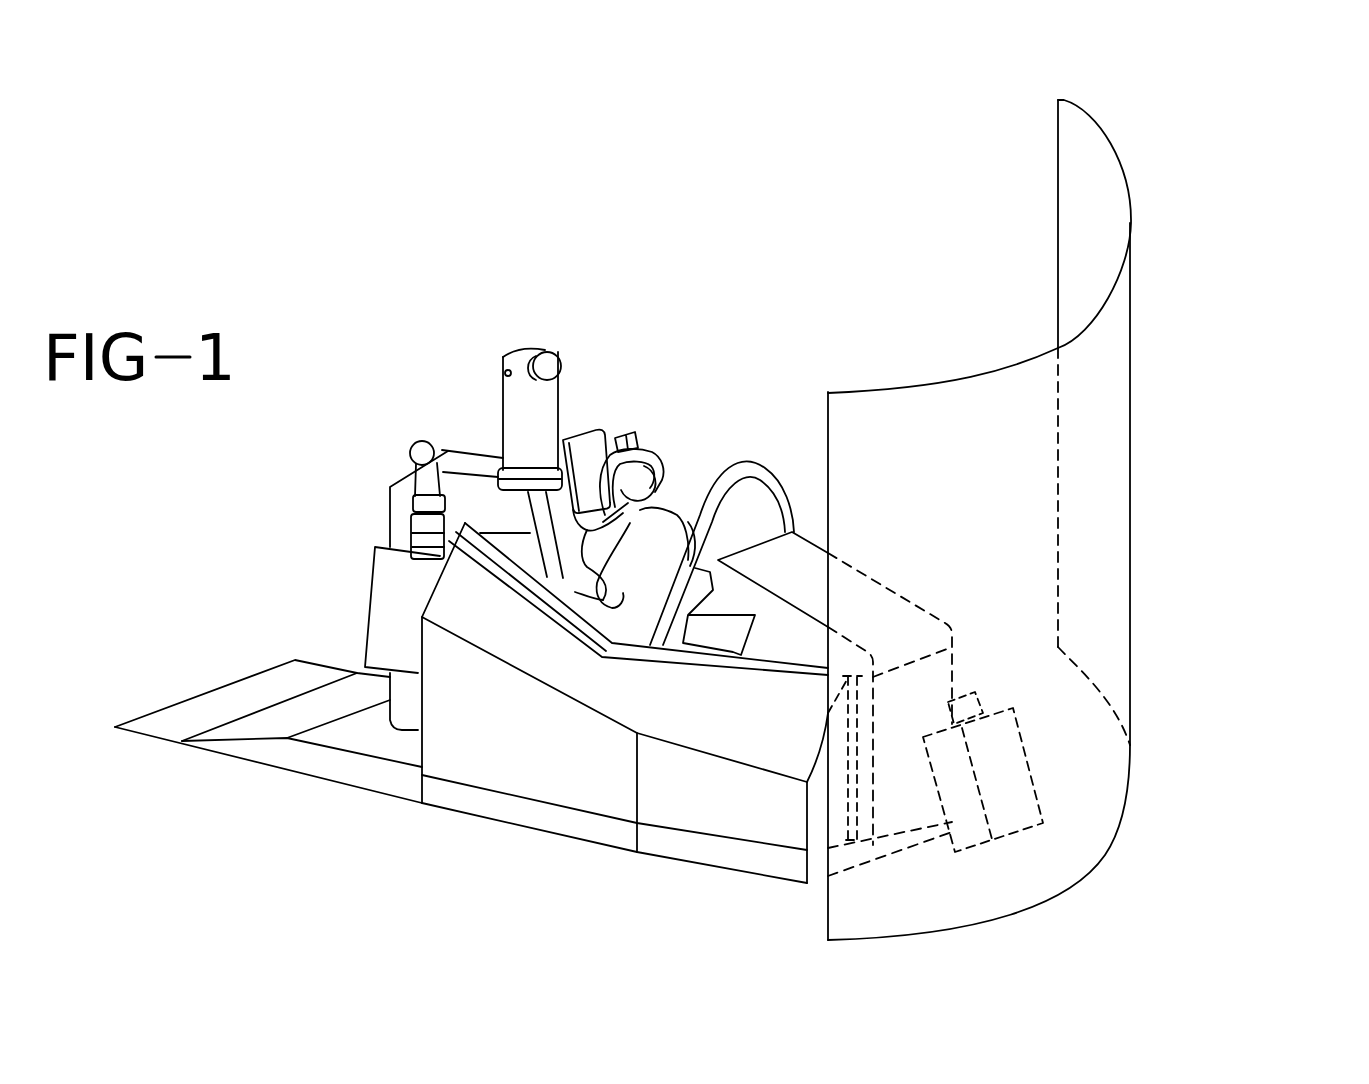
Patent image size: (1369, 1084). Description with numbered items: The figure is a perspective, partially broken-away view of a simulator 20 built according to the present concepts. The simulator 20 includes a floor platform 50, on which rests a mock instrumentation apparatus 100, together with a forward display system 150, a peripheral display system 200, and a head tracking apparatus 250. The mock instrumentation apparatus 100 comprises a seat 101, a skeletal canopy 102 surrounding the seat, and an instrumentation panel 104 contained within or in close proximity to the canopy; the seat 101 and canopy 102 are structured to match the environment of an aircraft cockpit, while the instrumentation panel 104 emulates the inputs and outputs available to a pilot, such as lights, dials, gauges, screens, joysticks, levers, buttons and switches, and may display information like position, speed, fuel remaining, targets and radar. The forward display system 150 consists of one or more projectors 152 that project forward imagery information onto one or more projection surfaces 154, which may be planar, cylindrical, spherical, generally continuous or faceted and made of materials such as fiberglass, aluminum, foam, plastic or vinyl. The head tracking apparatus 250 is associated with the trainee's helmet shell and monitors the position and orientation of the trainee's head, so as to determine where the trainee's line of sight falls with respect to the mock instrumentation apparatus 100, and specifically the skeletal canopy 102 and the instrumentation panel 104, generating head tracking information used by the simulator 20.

The simulator 20 is at (700, 184).
The floor platform 50 is at (291, 771).
The mock instrumentation apparatus 100 is at (529, 833).
The seat 101 is at (583, 456).
The skeletal canopy 102 is at (733, 468).
The instrumentation panel 104 is at (755, 532).
The forward display system 150 is at (1128, 892).
The projector 152 is at (1038, 750).
The projection surface 154 is at (1083, 228).
The peripheral display system 200 is at (660, 445).
The head tracking apparatus 250 is at (623, 434).